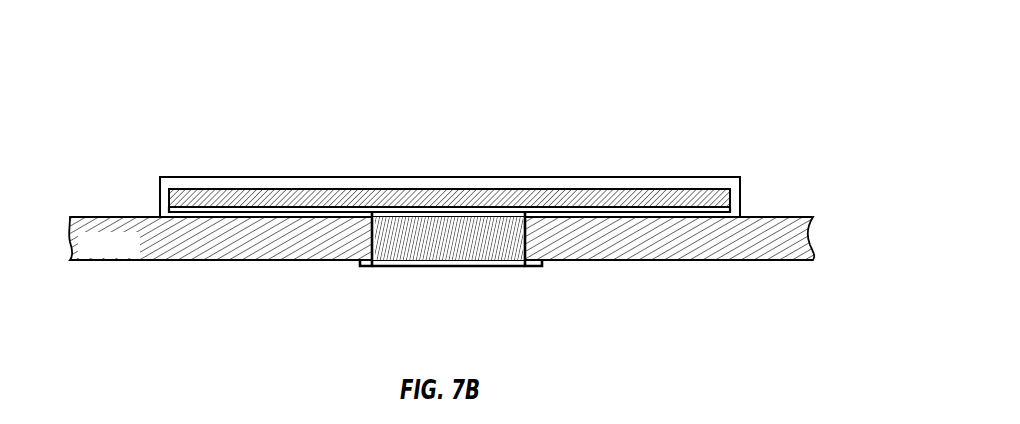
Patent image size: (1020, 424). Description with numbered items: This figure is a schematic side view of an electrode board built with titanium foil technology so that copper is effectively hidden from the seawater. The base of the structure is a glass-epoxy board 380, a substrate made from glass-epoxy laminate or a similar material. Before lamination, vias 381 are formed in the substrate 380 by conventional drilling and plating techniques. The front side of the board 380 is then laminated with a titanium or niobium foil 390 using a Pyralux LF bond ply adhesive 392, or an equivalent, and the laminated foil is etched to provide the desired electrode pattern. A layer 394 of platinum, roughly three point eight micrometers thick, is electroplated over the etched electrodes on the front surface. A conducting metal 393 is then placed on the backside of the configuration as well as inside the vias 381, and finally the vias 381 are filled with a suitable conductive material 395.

The G-10 board 380 is at (69, 238).
The via 381 is at (523, 256).
The titanium or niobium foil 390 is at (253, 189).
The Pyralux LF bond ply adhesive 392 is at (278, 208).
The conducting metal 393 is at (428, 221).
The layer of platinum 394 is at (228, 184).
The conductive material 395 is at (393, 266).